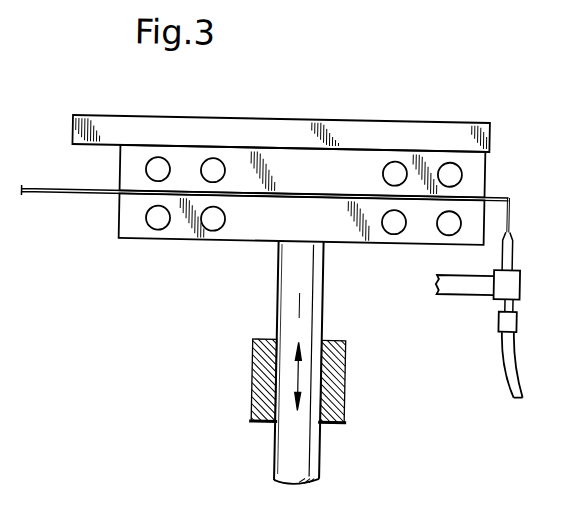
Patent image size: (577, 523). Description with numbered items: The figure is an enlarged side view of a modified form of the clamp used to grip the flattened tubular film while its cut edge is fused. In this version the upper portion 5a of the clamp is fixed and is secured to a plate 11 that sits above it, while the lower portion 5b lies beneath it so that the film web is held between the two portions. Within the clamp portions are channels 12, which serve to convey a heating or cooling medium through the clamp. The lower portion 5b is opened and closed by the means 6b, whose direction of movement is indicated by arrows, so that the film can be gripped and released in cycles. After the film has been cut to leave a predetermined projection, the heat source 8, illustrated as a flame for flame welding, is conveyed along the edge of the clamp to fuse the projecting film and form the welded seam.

The plate 11 is at (108, 118).
The upper portion of the clamp 5a is at (121, 171).
The lower portion of the clamp 5b is at (121, 227).
The channels 12 is at (456, 165).
The means for opening and closing the lower clamp portion 6b is at (324, 465).
The heat source 8 is at (513, 250).